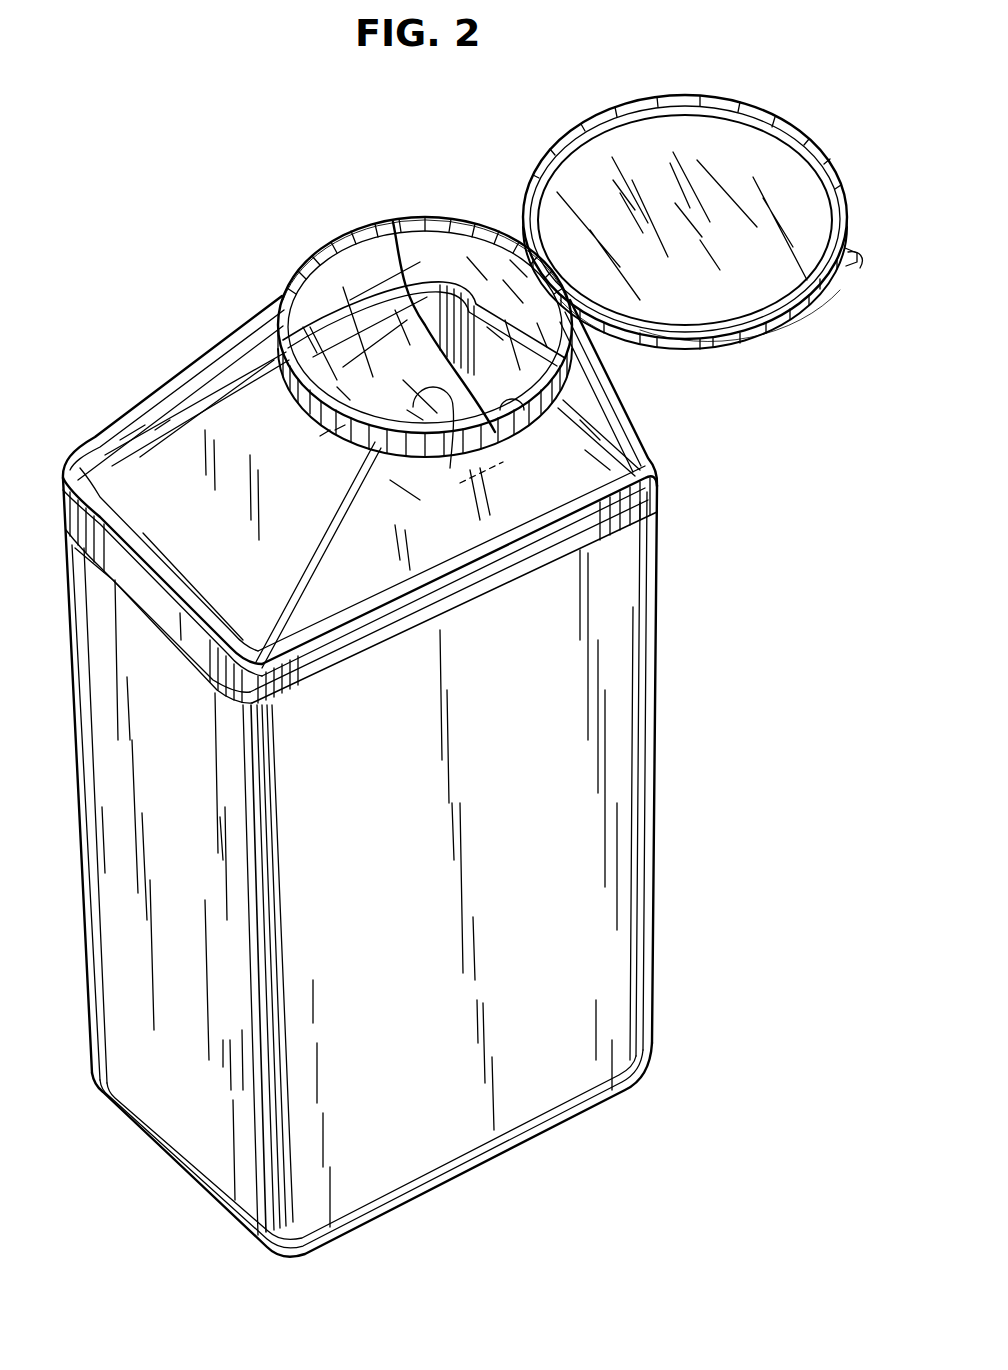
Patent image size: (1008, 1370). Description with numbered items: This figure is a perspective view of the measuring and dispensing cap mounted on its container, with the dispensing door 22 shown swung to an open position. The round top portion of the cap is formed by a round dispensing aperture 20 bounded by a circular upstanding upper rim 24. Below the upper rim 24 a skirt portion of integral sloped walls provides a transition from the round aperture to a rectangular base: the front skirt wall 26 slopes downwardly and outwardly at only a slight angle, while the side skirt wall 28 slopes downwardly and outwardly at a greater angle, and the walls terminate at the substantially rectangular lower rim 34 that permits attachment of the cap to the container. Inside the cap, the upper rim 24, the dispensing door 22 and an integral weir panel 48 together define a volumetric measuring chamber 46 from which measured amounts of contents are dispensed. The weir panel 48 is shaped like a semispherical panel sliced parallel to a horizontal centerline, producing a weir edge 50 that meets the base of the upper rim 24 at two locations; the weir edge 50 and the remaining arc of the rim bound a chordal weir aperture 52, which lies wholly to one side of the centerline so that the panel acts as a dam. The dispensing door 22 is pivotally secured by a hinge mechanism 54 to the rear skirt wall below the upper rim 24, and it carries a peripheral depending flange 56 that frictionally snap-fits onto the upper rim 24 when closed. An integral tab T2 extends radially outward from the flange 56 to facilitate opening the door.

The dispensing aperture 20 is at (450, 246).
The dispensing door 22 is at (679, 96).
The upper rim 24 is at (330, 252).
The front skirt wall 26 is at (143, 433).
The side skirt wall 28 is at (385, 595).
The lower rim 34 is at (500, 577).
The measuring chamber 46 is at (450, 452).
The weir panel 48 is at (388, 276).
The weir edge 50 is at (502, 482).
The weir aperture 52 is at (478, 332).
The hinge mechanism 54 is at (596, 320).
The peripheral depending flange 56 is at (732, 326).
The tab T2 is at (870, 269).